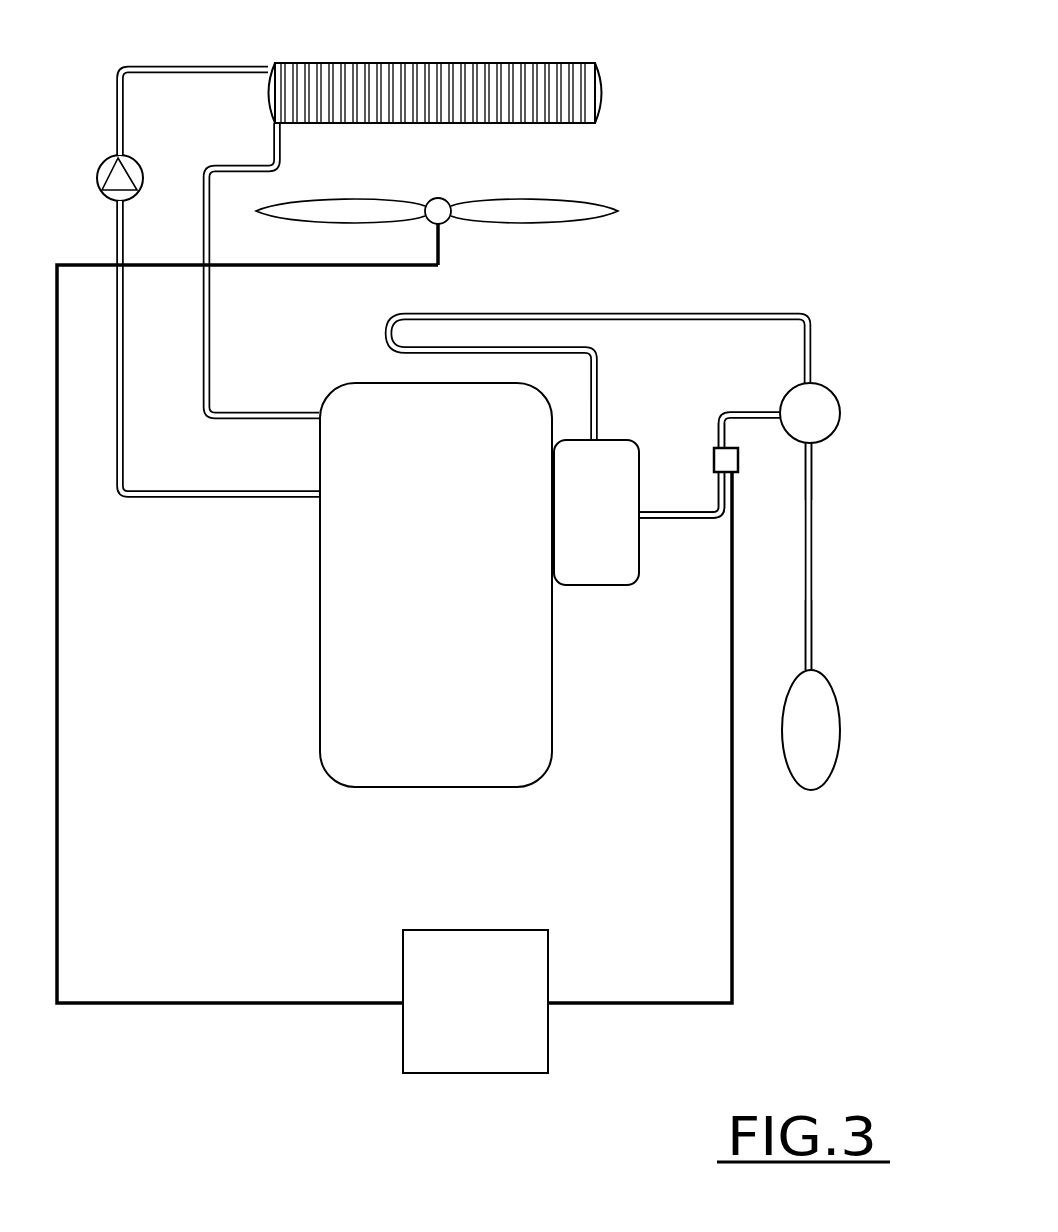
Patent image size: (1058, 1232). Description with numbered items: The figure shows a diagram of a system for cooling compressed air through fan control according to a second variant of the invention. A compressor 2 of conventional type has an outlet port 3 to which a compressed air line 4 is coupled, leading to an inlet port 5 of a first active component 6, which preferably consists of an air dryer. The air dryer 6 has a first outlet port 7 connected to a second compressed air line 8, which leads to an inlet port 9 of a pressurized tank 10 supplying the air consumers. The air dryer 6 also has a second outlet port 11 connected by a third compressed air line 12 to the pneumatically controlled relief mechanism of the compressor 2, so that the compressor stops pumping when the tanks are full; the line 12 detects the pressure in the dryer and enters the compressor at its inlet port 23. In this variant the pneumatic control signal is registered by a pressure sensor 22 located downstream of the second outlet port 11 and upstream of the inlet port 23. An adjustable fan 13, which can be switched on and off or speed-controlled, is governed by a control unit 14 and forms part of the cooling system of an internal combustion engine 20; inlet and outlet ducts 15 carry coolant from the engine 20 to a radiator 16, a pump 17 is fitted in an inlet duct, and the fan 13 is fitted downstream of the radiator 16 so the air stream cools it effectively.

The compressor 2 is at (602, 546).
The outlet port 3 is at (600, 438).
The compressed air line 4 is at (613, 315).
The inlet port 5 is at (813, 382).
The first active component 6 is at (799, 430).
The first outlet port 7 is at (817, 443).
The second compressed air line 8 is at (812, 542).
The inlet port 9 is at (811, 665).
The pressurized tank 10 is at (828, 749).
The second outlet port 11 is at (773, 410).
The third compressed air line 12 is at (698, 518).
The fan 13 is at (452, 200).
The control unit 14 is at (510, 1006).
The inlet and outlet ducts 15 is at (203, 373).
The radiator 16 is at (563, 63).
The pump 17 is at (103, 160).
The internal combustion engine 20 is at (442, 546).
The pressure sensor 22 is at (740, 463).
The inlet port 23 is at (643, 518).